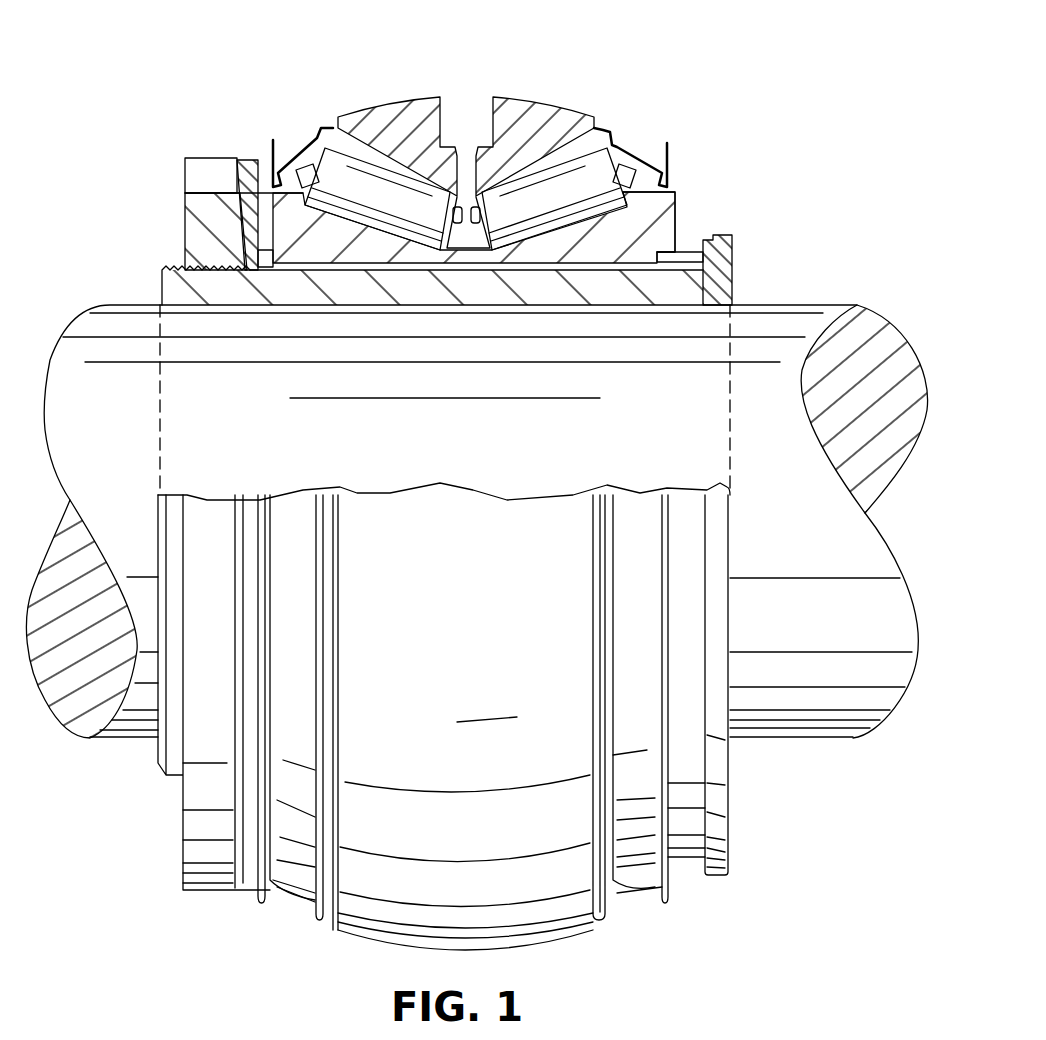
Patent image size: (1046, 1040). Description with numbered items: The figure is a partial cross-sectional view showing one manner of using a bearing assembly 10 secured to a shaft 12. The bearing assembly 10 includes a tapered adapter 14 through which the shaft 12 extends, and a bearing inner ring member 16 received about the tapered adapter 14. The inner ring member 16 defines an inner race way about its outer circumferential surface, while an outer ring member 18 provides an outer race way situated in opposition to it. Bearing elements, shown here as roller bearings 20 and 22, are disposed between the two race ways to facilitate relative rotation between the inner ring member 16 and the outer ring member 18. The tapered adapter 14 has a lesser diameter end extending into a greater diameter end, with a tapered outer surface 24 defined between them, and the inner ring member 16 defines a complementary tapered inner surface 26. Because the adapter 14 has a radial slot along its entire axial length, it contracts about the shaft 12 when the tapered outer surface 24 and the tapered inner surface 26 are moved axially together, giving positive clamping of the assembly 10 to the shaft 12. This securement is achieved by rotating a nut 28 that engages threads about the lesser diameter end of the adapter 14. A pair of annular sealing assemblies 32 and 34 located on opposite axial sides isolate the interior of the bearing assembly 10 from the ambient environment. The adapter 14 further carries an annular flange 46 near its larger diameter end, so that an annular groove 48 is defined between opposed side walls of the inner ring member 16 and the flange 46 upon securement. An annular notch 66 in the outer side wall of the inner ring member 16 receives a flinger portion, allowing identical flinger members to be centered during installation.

The bearing assembly 10 is at (667, 66).
The shaft 12 is at (777, 323).
The tapered adapter 14 is at (173, 293).
The bearing inner ring member 16 is at (676, 192).
The outer ring member 18 is at (532, 100).
The roller bearing 20 is at (383, 192).
The roller bearing 22 is at (518, 200).
The tapered outer surface 24 is at (607, 262).
The tapered inner surface 26 is at (348, 310).
The nut 28 is at (185, 235).
The annular sealing assembly 32 is at (300, 145).
The annular sealing assembly 34 is at (637, 152).
The annular flange 46 is at (722, 240).
The annular groove 48 is at (686, 252).
The annular notch 66 is at (273, 268).